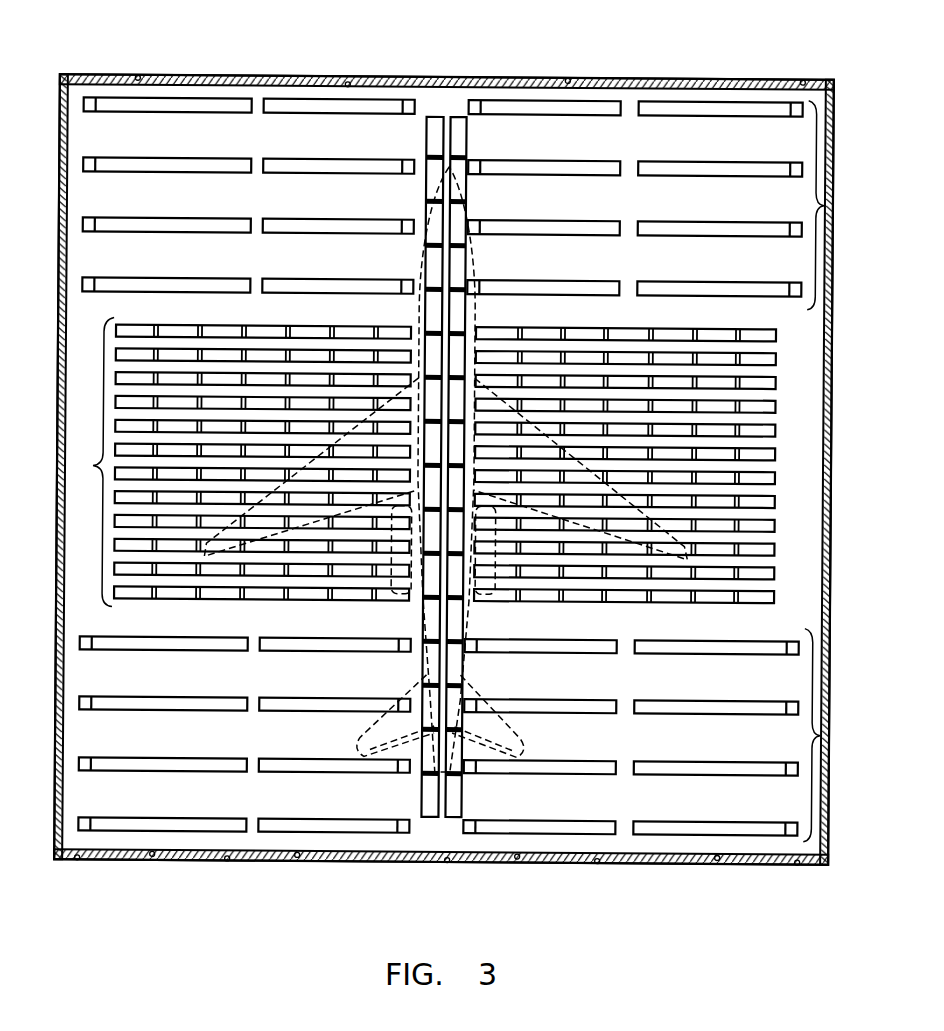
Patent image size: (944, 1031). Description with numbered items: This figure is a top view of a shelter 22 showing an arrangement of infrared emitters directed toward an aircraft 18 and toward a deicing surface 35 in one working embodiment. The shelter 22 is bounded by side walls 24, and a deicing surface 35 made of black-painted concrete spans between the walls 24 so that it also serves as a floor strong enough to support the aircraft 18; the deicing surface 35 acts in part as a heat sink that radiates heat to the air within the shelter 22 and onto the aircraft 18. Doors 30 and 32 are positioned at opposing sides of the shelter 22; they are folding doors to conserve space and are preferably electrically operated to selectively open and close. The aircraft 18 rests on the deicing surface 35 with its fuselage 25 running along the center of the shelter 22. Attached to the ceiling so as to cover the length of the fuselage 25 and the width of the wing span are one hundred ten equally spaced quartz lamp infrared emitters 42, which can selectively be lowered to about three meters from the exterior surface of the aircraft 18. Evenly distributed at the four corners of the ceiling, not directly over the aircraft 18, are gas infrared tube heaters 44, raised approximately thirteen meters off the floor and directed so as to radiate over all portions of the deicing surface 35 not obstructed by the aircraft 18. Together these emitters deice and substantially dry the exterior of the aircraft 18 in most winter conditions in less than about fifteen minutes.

The aircraft 18 is at (474, 616).
The shelter 22 is at (845, 306).
The side walls 24 is at (838, 452).
The fuselage 25 is at (472, 308).
The door 30 is at (355, 77).
The door 32 is at (412, 864).
The deicing surface 35 is at (84, 311).
The quartz lamp infrared emitters 42 is at (425, 111).
The gas infrared tube heaters 44 is at (822, 203).